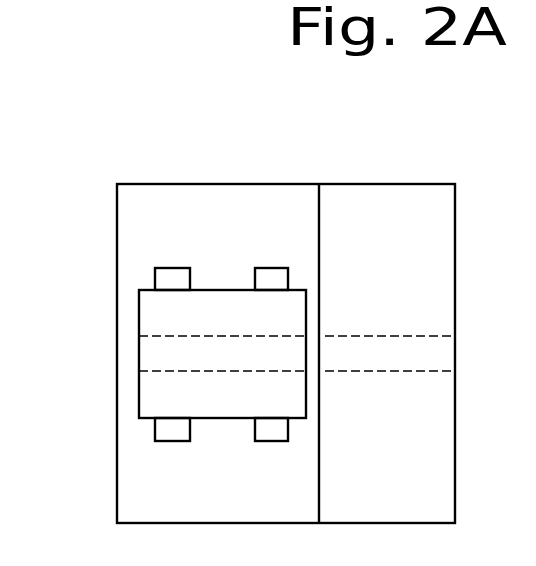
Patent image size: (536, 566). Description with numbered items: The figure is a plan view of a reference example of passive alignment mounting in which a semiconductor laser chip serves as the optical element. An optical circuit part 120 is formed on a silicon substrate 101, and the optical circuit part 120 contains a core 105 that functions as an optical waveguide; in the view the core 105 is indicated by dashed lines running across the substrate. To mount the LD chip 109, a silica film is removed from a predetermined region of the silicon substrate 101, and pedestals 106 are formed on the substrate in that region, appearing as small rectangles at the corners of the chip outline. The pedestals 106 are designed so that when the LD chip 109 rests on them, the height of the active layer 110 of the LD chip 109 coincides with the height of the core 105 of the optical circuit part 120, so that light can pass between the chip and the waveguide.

The silicon substrate 101 is at (126, 479).
The core 105 is at (342, 360).
The pedestals 106 is at (162, 277).
The LD chip 109 is at (152, 396).
The active layer 110 is at (195, 350).
The optical circuit part 120 is at (388, 200).